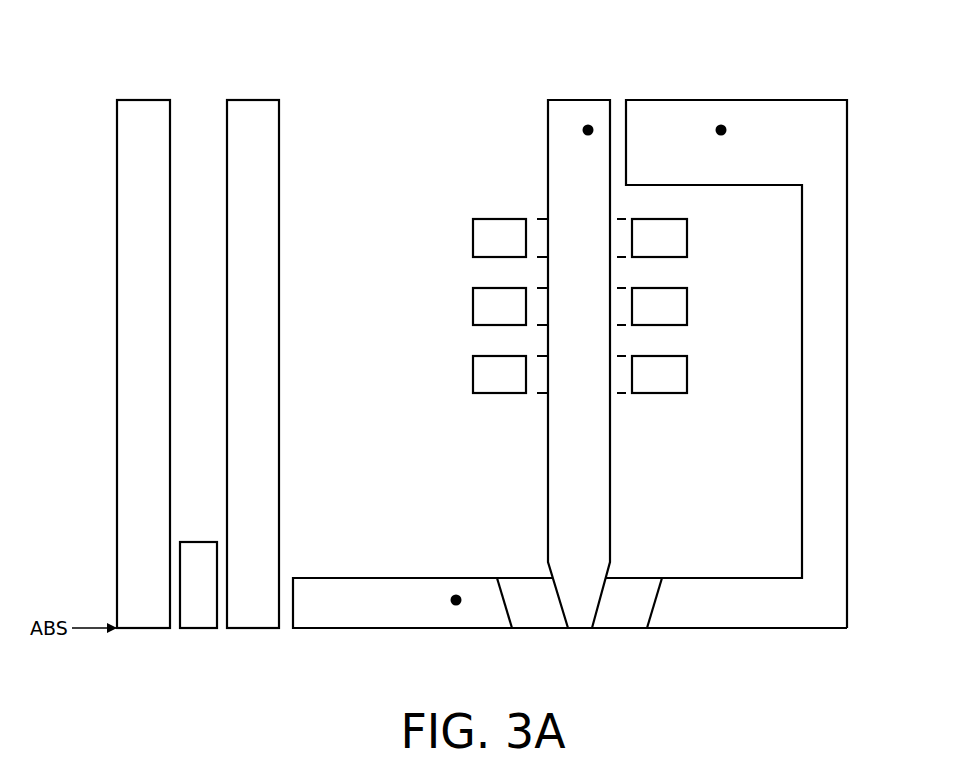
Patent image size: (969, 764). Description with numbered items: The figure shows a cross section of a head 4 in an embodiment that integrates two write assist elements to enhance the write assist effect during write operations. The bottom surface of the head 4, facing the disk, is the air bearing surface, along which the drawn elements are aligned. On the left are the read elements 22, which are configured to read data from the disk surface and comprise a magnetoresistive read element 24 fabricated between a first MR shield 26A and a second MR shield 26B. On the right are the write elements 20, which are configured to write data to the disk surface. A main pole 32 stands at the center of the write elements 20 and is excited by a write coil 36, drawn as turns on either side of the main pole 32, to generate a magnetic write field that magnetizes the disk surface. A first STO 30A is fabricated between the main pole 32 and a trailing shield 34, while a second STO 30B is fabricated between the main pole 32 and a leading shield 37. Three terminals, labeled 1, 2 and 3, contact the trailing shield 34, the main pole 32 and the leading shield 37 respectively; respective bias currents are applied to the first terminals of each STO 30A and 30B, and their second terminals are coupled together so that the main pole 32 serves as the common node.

The head 4 is at (85, 65).
The read elements 22 is at (283, 90).
The MR shield 26A is at (143, 629).
The magnetoresistive read element 24 is at (200, 629).
The MR shield 26B is at (254, 629).
The write elements 20 is at (292, 88).
The leading shield 37 is at (404, 629).
The second STO 30B is at (536, 629).
The main pole 32 is at (579, 629).
The first STO 30A is at (626, 629).
The trailing shield 34 is at (743, 629).
The write coil 36 is at (497, 394).
The first terminal 1 is at (721, 130).
The second terminal 2 is at (588, 130).
The third terminal 3 is at (456, 600).